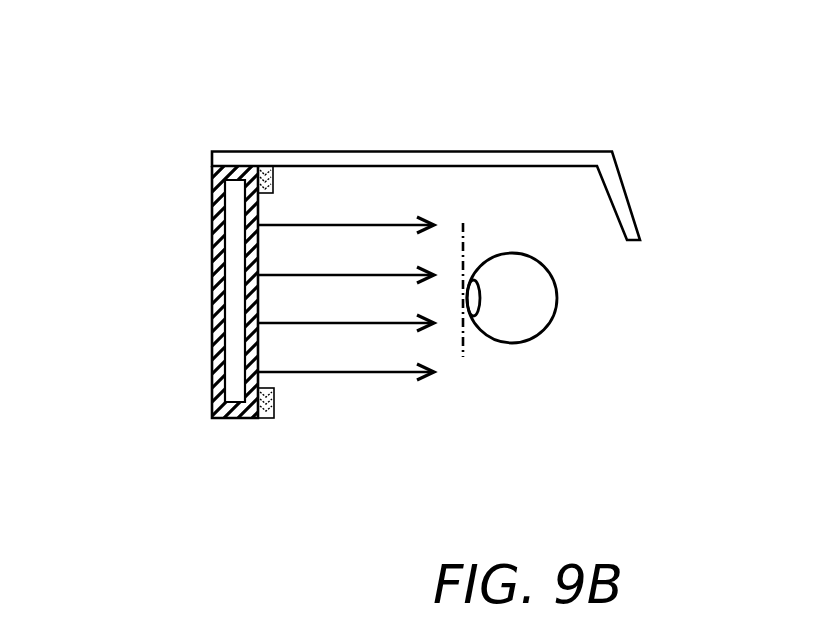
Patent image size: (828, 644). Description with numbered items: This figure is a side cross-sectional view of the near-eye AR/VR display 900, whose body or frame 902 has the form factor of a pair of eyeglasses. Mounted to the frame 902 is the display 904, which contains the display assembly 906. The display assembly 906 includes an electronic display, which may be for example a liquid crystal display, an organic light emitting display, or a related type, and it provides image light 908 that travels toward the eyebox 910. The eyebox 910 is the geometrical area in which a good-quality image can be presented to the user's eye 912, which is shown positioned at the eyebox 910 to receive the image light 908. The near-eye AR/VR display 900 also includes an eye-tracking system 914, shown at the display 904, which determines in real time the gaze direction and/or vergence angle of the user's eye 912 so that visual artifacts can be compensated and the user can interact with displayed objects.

The near-eye AR/VR display 900 is at (255, 97).
The frame 902 is at (568, 155).
The display 904 is at (212, 183).
The display assembly 906 is at (236, 267).
The image light 908 is at (345, 392).
The eyebox 910 is at (463, 362).
The user's eye 912 is at (546, 311).
The eye-tracking system 914 is at (272, 180).